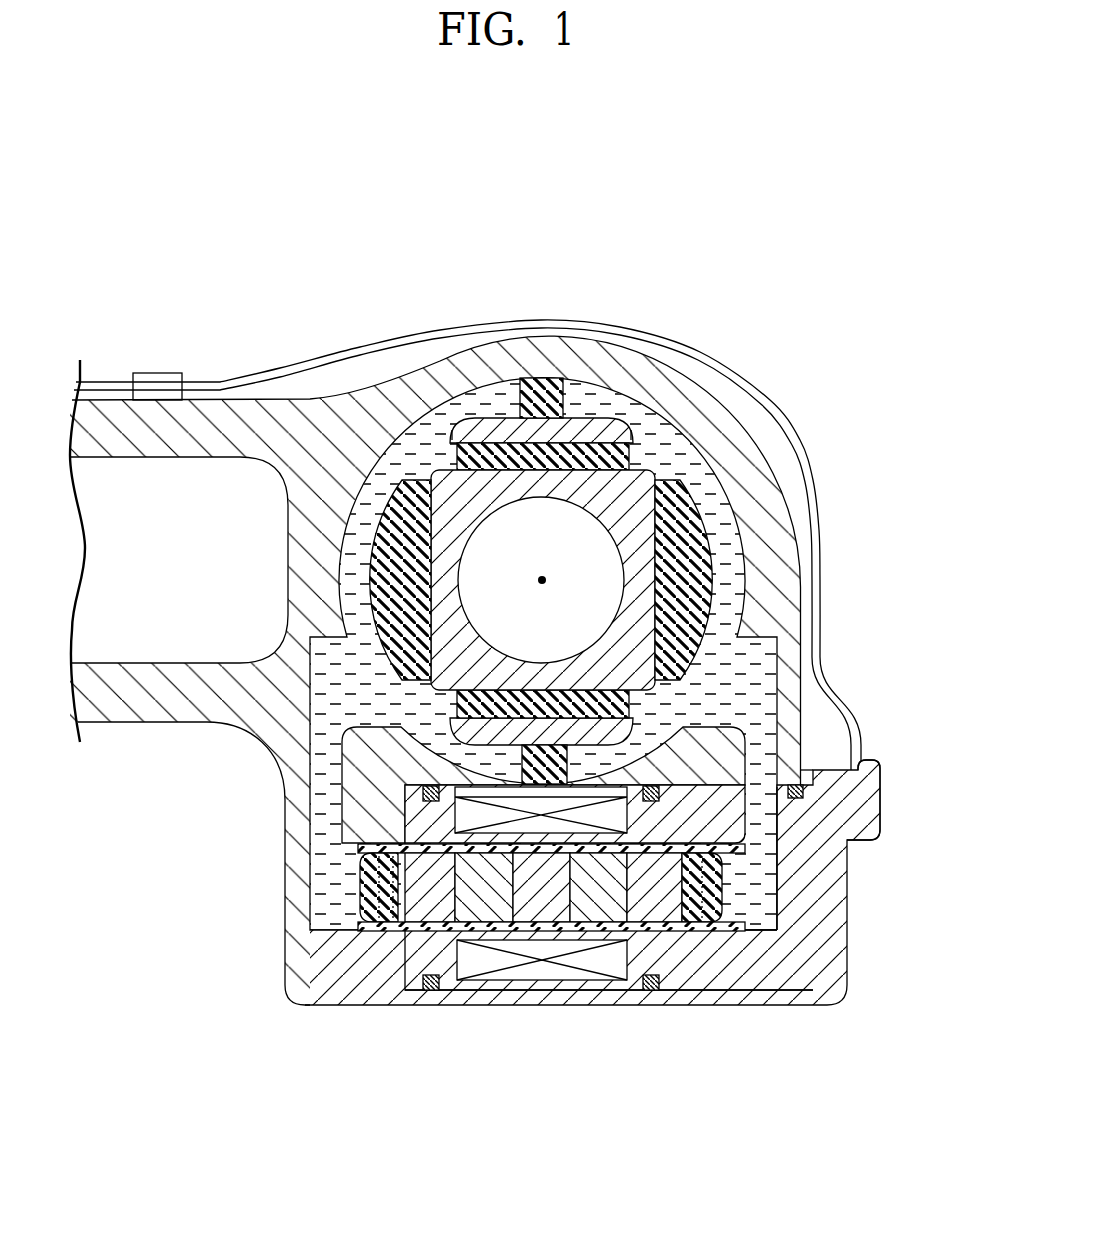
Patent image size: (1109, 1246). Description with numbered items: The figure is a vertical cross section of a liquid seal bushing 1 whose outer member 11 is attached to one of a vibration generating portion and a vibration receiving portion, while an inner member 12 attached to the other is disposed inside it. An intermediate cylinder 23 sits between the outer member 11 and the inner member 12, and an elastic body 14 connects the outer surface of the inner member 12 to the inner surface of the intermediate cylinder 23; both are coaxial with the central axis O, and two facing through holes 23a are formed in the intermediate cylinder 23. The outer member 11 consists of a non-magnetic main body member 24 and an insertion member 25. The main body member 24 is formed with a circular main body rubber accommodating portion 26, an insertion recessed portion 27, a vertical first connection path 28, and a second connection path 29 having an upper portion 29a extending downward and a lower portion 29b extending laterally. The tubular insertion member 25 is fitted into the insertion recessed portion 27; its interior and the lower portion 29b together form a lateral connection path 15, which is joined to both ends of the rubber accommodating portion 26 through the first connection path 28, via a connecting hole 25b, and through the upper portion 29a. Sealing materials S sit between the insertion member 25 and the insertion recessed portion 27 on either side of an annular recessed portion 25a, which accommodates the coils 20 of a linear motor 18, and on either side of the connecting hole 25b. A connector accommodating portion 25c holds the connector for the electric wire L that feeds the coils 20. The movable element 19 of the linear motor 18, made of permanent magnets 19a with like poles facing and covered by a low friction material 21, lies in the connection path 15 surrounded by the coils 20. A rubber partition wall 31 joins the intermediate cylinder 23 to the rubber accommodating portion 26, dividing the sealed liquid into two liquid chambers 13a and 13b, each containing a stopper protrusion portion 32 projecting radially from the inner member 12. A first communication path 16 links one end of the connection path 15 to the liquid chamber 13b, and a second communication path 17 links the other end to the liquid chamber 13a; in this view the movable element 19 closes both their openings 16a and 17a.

The liquid seal bushing 1 is at (780, 196).
The outer member 11 is at (531, 580).
The inner member 12 is at (493, 419).
The liquid chamber 13a is at (703, 487).
The liquid chamber 13b is at (357, 512).
The elastic body 14 is at (633, 455).
The connection path 15 is at (760, 919).
The first communication path 16 is at (784, 1039).
The opening 16a is at (733, 930).
The second communication path 17 is at (456, 947).
The opening 17a is at (380, 905).
The linear motor 18 is at (636, 977).
The movable element 19 is at (660, 948).
The permanent magnet 19a is at (430, 912).
The coil 20 is at (533, 983).
The low friction material 21 is at (363, 922).
The intermediate cylinder 23 is at (497, 418).
The through hole 23a is at (454, 436).
The main body member 24 is at (636, 352).
The insertion member 25 is at (646, 847).
The annular recessed portion 25a is at (500, 830).
The connecting hole 25b is at (768, 820).
The connector accommodating portion 25c is at (873, 760).
The main body rubber accommodating portion 26 is at (578, 543).
The insertion recessed portion 27 is at (758, 987).
The first connection path 28 is at (762, 753).
The second connection path 29 is at (475, 670).
The upper portion 29a is at (325, 750).
The lower portion 29b is at (325, 897).
The partition wall 31 is at (565, 396).
The stopper protrusion portion 32 is at (378, 565).
The electric wire L is at (222, 385).
The central axis O is at (542, 576).
The sealing material S is at (798, 788).